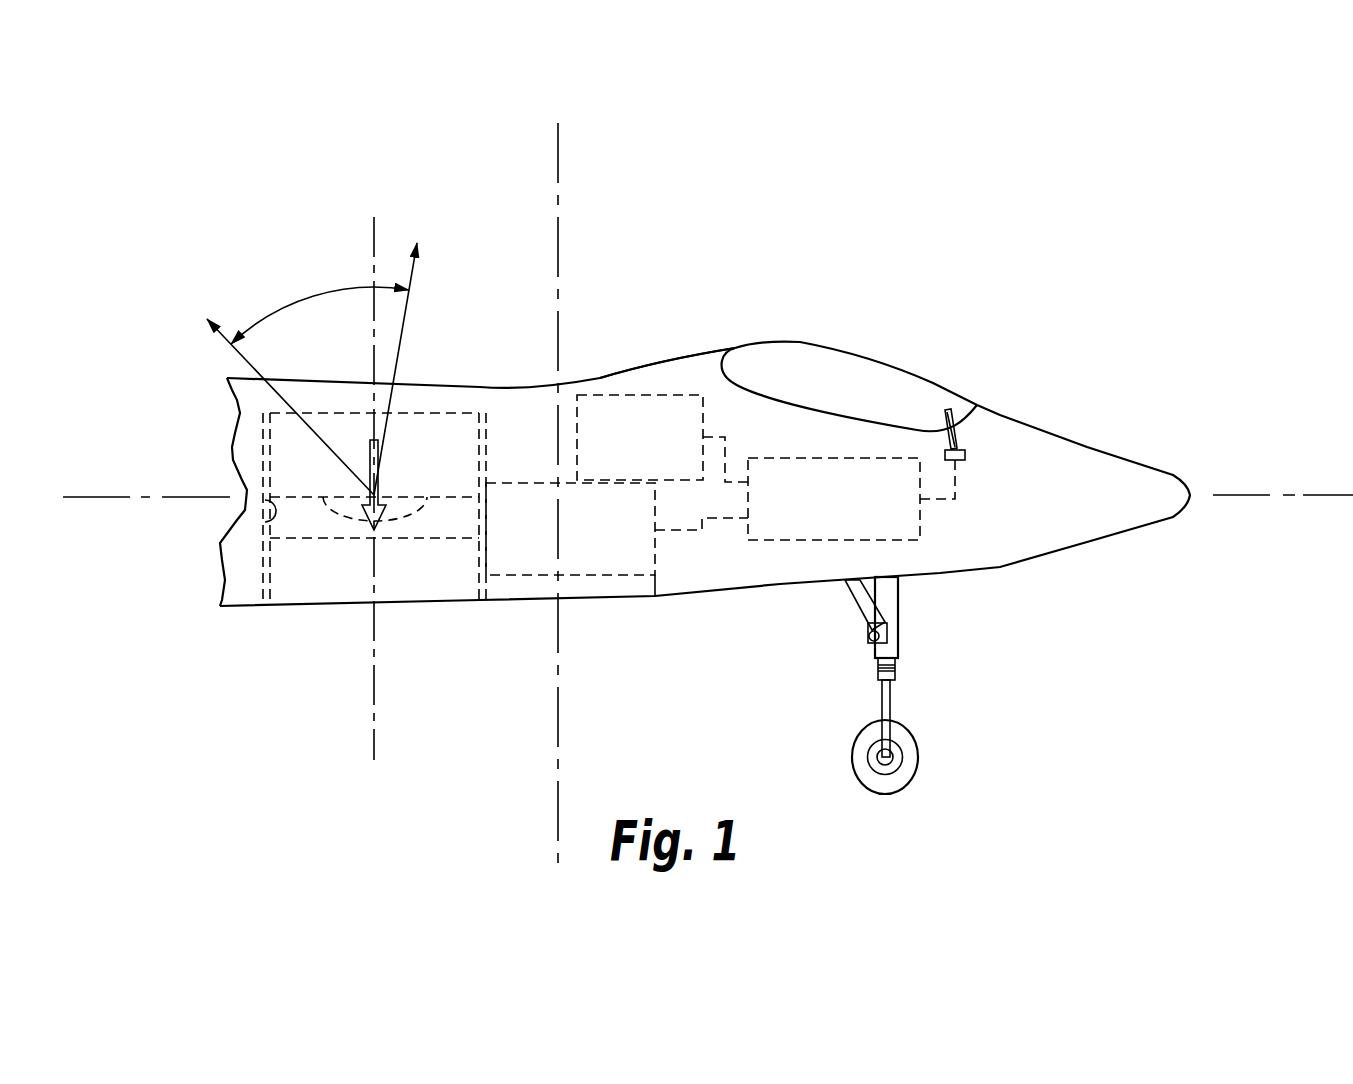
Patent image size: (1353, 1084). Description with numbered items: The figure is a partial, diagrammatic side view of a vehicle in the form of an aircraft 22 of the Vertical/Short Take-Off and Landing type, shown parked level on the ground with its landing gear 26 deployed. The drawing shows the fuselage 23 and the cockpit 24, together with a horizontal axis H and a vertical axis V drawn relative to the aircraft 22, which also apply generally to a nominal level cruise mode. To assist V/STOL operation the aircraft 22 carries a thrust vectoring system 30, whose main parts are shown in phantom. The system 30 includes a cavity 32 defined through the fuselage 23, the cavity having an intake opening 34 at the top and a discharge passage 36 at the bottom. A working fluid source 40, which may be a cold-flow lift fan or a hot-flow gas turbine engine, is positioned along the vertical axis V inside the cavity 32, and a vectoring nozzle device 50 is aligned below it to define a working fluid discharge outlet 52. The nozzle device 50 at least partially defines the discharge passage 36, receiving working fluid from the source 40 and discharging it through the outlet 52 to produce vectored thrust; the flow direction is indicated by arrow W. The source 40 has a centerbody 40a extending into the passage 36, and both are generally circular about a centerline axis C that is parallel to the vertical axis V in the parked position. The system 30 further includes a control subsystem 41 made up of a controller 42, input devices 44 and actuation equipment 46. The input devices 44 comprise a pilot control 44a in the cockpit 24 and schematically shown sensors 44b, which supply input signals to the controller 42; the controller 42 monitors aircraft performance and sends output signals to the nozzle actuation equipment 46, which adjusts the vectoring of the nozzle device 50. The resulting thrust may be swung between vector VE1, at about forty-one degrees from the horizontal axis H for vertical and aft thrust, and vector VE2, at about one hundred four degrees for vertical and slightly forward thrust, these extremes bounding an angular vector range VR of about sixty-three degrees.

The aircraft 22 is at (1181, 467).
The fuselage 23 is at (679, 362).
The cockpit 24 is at (892, 362).
The landing gear 26 is at (900, 648).
The thrust vectoring system 30 is at (264, 615).
The cavity 32 is at (264, 398).
The intake opening 34 is at (482, 400).
The discharge passage 36 is at (264, 520).
The working fluid source 40 is at (264, 453).
The centerbody 40a is at (338, 516).
The control subsystem 41 is at (668, 569).
The controller 42 is at (581, 569).
The input devices 44 is at (623, 395).
The pilot control 44a is at (948, 440).
The sensors 44b is at (657, 466).
The actuation equipment 46 is at (553, 483).
The vectoring nozzle device 50 is at (473, 608).
The working fluid discharge outlet 52 is at (272, 608).
The horizontal axis H is at (108, 497).
The vertical axis V is at (557, 160).
The centerline axis C is at (373, 232).
The arrow W is at (368, 462).
The vector VE1 is at (270, 393).
The vector VE2 is at (411, 352).
The angular vector range VR is at (305, 290).